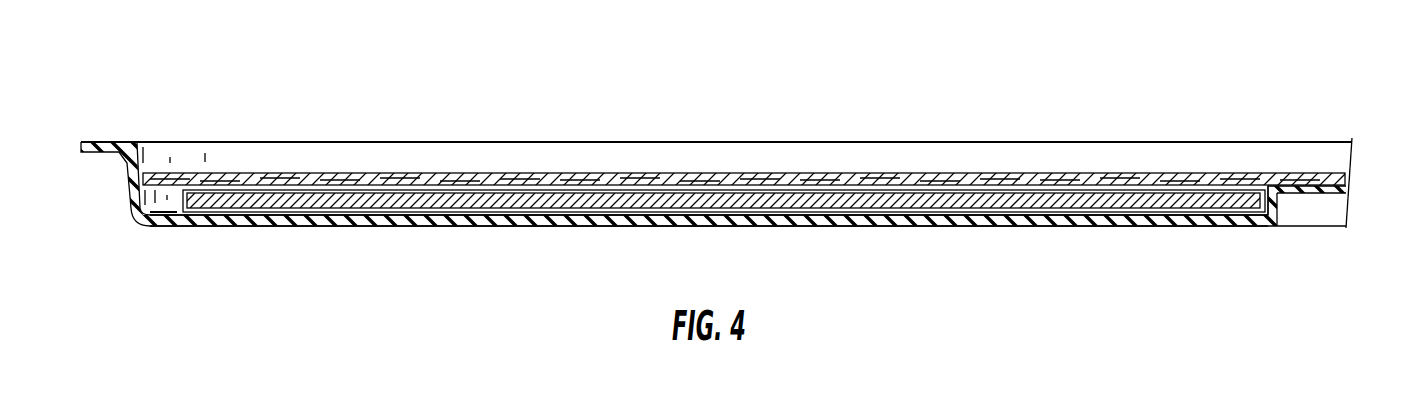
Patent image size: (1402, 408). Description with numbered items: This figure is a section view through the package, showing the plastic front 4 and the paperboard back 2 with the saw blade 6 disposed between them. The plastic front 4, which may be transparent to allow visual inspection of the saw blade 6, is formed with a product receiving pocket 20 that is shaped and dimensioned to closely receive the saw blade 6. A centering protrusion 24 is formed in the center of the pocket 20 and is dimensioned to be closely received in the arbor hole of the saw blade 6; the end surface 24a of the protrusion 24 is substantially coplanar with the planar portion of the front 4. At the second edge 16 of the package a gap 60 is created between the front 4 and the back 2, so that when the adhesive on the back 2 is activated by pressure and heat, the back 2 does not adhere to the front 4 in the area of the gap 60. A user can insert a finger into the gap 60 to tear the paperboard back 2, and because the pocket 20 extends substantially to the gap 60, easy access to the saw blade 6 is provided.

The second edge 16 is at (128, 123).
The gap 60 is at (146, 157).
The paperboard back 2 is at (420, 177).
The saw blade 6 is at (1028, 200).
The product receiving pocket 20 is at (727, 259).
The plastic front 4 is at (157, 221).
The centering protrusion 24 is at (1278, 217).
The end surface 24a is at (1310, 197).